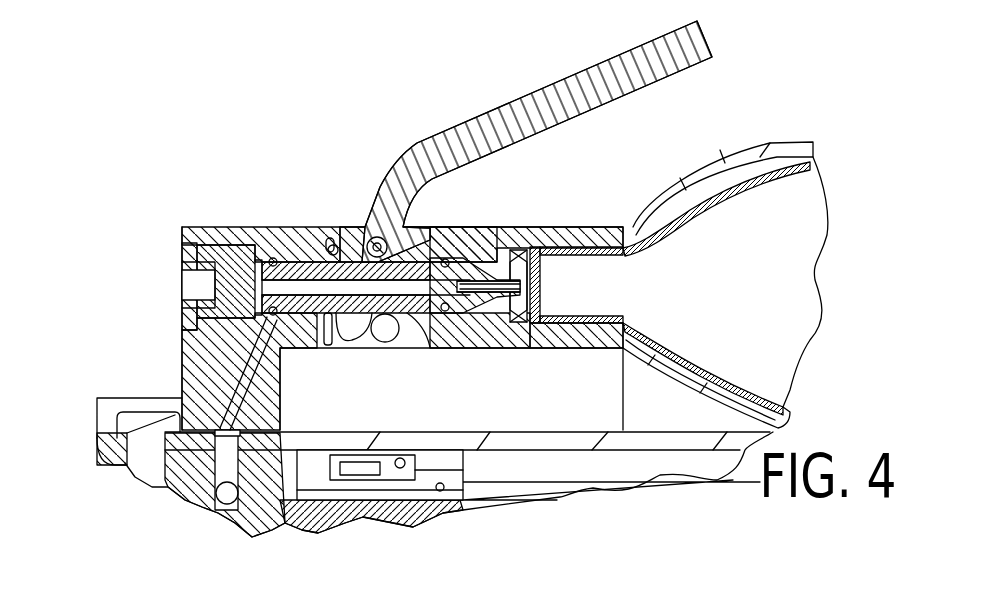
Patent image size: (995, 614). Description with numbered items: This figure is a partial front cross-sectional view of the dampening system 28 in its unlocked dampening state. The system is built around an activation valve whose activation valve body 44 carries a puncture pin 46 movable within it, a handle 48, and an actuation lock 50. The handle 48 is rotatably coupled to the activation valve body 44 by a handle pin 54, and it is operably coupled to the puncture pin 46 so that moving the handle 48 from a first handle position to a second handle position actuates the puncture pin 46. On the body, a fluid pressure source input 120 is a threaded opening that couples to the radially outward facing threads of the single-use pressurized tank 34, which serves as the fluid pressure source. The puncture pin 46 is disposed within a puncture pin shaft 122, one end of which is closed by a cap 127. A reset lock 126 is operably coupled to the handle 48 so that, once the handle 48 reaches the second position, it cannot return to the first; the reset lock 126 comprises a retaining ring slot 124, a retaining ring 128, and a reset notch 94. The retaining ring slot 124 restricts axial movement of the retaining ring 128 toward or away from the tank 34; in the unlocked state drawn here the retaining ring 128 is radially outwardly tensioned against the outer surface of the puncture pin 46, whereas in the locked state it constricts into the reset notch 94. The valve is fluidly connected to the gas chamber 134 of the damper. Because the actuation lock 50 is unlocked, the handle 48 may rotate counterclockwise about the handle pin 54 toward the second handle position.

The dampening system 28 is at (858, 78).
The single-use pressurized tank 34 is at (735, 195).
The activation valve body 44 is at (590, 230).
The puncture pin 46 is at (428, 352).
The handle 48 is at (540, 100).
The actuation lock 50 is at (391, 347).
The handle pin 54 is at (395, 238).
The reset notch 94 is at (285, 245).
The fluid pressure source input 120 is at (622, 258).
The puncture pin shaft 122 is at (483, 303).
The retaining ring slot 124 is at (300, 262).
The reset lock 126 is at (330, 348).
The cap 127 is at (185, 262).
The retaining ring 128 is at (336, 254).
The gas chamber 134 is at (343, 470).